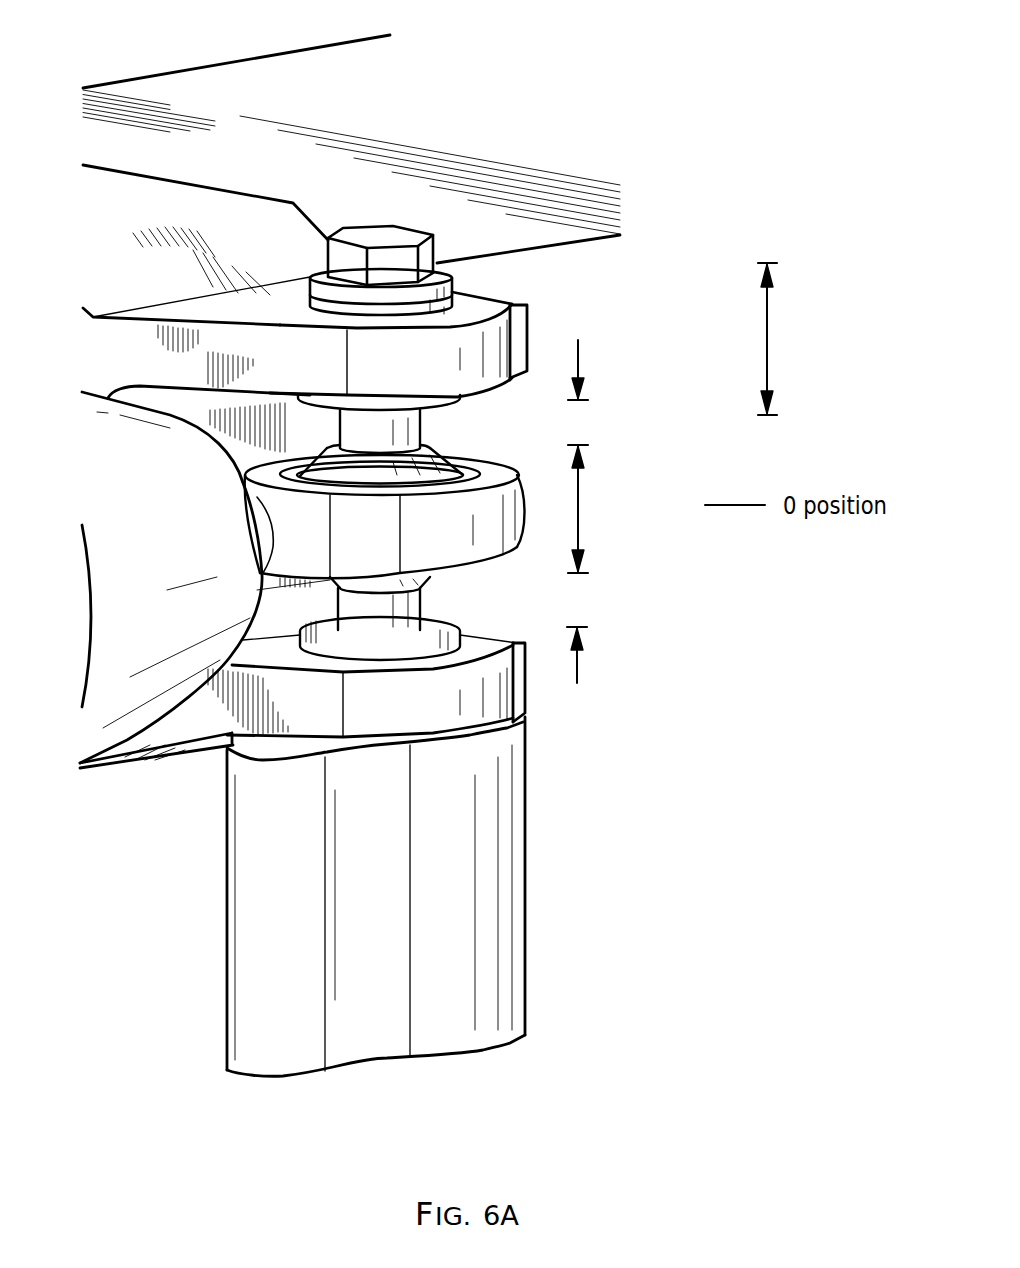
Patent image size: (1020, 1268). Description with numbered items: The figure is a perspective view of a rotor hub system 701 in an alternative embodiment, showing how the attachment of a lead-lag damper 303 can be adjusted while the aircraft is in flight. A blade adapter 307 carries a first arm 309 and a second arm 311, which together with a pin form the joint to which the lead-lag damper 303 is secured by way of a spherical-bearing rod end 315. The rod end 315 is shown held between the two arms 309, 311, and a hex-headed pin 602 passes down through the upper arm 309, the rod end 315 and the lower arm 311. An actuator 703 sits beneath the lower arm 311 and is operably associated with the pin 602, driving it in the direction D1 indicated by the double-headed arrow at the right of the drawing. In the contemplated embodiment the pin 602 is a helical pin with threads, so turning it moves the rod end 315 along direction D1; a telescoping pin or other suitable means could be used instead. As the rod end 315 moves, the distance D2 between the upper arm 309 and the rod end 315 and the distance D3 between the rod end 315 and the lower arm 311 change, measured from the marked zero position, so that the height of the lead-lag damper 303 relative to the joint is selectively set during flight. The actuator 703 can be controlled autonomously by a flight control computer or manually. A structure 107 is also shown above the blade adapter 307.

The base plate 107 is at (278, 55).
The blade adapter 307 is at (203, 187).
The pin 602 is at (437, 257).
The first arm 309 is at (527, 328).
The rod end 315 is at (527, 512).
The second arm 311 is at (527, 702).
The lead-lag damper 303 is at (110, 747).
The actuator 703 is at (527, 870).
The system 701 is at (687, 55).
The direction D1 is at (770, 340).
The distance D2 is at (578, 360).
The distance D3 is at (577, 662).